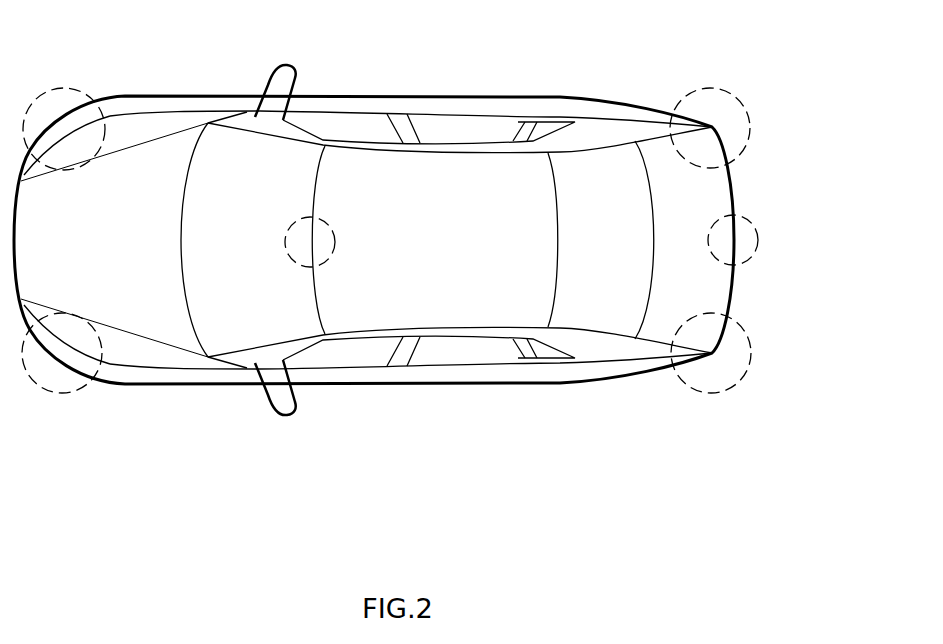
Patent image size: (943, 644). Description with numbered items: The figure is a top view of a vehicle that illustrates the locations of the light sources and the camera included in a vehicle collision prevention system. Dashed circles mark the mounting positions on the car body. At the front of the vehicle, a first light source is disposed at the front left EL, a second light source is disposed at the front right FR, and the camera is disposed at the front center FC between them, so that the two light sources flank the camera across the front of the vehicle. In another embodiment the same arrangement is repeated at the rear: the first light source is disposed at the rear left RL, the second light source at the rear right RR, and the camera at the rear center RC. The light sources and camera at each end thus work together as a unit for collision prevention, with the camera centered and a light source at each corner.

The front right FR is at (59, 89).
The rear right RR is at (708, 89).
The front left sensor position EL is at (62, 393).
The rear left RL is at (709, 393).
The front center FC is at (335, 238).
The rear center RC is at (758, 238).